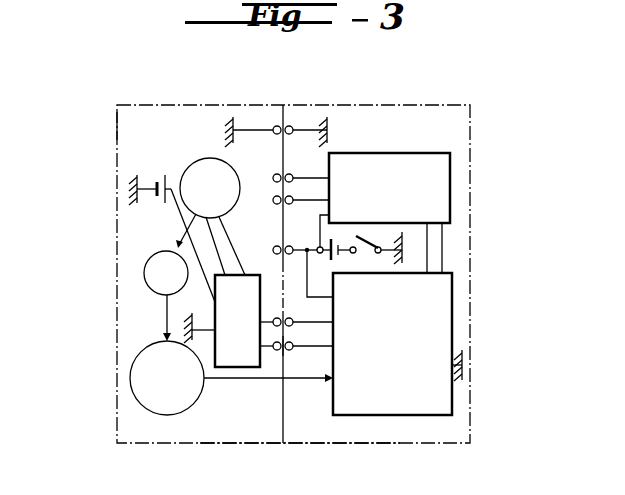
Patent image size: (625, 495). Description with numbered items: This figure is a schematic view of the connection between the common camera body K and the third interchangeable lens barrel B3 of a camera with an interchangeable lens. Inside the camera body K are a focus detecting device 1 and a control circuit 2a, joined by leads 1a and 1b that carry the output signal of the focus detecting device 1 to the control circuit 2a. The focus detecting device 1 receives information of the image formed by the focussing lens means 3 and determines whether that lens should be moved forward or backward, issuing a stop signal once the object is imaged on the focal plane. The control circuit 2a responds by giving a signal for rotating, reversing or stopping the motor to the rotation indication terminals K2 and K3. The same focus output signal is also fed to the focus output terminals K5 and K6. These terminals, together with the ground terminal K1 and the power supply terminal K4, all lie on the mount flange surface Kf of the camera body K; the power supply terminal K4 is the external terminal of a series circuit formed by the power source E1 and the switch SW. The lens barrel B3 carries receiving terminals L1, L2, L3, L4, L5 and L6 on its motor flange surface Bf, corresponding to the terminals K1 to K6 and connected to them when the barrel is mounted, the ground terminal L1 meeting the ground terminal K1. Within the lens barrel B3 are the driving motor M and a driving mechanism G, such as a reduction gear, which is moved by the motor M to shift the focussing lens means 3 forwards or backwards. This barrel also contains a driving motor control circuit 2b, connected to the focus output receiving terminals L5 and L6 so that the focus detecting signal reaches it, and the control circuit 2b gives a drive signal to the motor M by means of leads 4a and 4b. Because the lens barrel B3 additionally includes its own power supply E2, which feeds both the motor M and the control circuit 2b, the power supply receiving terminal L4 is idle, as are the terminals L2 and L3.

The focus detecting device 1 is at (442, 320).
The lead 1a is at (441, 240).
The lead 1b is at (427, 268).
The control circuit 2a is at (442, 190).
The driving motor control circuit 2b is at (231, 368).
The focussing lens means 3 is at (181, 410).
The lead 4a is at (222, 255).
The lead 4b is at (238, 244).
The camera body K is at (438, 111).
The mount flange surface Kf is at (284, 403).
The motor flange surface Bf is at (286, 425).
The lens barrel B3 is at (118, 128).
The power source E1 is at (334, 265).
The power supply E2 is at (167, 180).
The switch SW is at (376, 254).
The driving motor M is at (210, 188).
The driving mechanism G is at (166, 273).
The ground receiving terminal L1 is at (274, 128).
The receiving terminal L2 is at (274, 175).
The receiving terminal L3 is at (274, 198).
The power supply receiving terminal L4 is at (274, 248).
The focus output receiving terminal L5 is at (299, 334).
The focus output receiving terminal L6 is at (276, 350).
The ground terminal K1 is at (288, 128).
The rotation indication terminal K2 is at (288, 175).
The rotation indication terminal K3 is at (294, 192).
The power supply terminal K4 is at (290, 247).
The focus output terminal K5 is at (290, 320).
The focus output terminal K6 is at (290, 349).